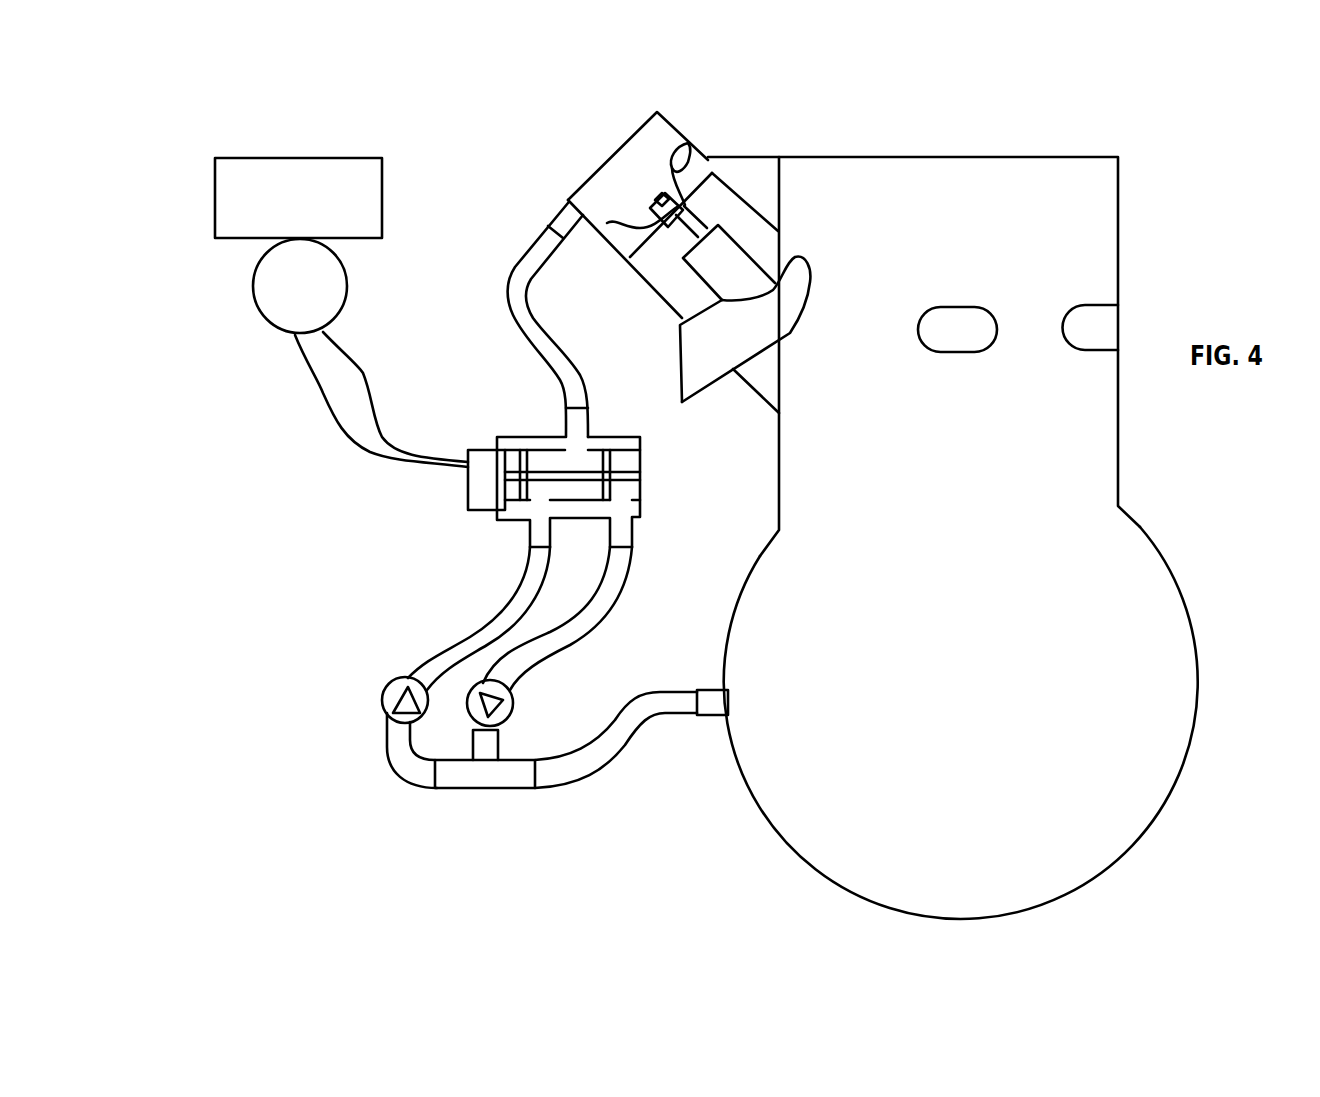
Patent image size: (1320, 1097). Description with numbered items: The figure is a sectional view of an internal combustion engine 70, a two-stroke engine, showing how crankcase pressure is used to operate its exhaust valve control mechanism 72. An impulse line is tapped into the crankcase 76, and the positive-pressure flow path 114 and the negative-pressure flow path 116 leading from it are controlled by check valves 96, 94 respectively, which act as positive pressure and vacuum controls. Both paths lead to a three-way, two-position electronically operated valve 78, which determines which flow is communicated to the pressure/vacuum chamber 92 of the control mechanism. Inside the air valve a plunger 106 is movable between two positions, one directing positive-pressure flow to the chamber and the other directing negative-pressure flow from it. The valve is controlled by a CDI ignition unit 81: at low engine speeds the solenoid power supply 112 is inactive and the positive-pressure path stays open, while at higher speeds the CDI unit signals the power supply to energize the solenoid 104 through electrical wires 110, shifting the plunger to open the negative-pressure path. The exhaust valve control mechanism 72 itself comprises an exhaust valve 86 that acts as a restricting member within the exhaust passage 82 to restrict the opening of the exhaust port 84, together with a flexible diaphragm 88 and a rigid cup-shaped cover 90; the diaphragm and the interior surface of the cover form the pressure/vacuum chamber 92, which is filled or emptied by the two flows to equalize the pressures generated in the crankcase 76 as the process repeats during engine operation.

The internal combustion engine 70 is at (998, 92).
The exhaust valve control mechanism 72 is at (533, 145).
The crankcase 76 is at (745, 705).
The electronically operated valve 78 is at (590, 479).
The CDI ignition unit 81 is at (297, 158).
The exhaust passage 82 is at (697, 362).
The exhaust port 84 is at (797, 303).
The exhaust valve 86 is at (752, 266).
The flexible diaphragm 88 is at (690, 144).
The rigid cup-shaped cover 90 is at (633, 131).
The pressure/vacuum chamber 92 is at (620, 168).
The check valve 94 is at (512, 708).
The check valve 96 is at (388, 684).
The solenoid 104 is at (468, 500).
The plunger 106 is at (555, 478).
The electrical wires 110 is at (362, 377).
The solenoid power supply 112 is at (347, 290).
The P+ flow path 114 is at (468, 628).
The P- flow path 116 is at (606, 606).